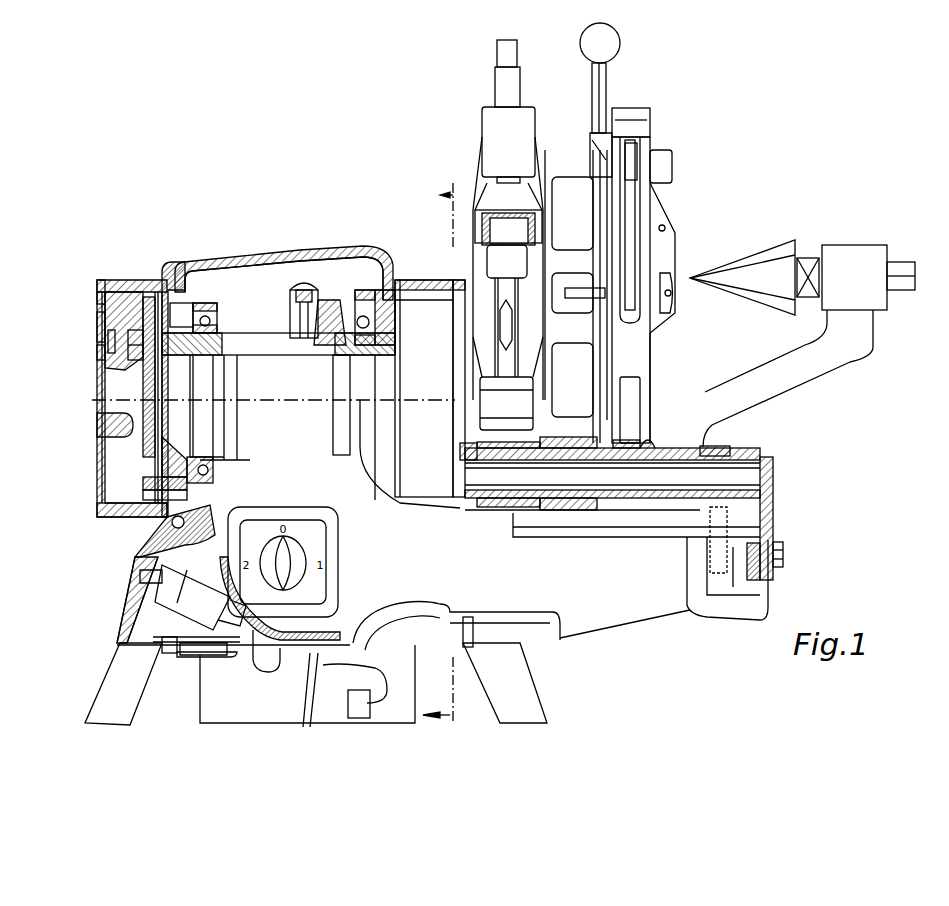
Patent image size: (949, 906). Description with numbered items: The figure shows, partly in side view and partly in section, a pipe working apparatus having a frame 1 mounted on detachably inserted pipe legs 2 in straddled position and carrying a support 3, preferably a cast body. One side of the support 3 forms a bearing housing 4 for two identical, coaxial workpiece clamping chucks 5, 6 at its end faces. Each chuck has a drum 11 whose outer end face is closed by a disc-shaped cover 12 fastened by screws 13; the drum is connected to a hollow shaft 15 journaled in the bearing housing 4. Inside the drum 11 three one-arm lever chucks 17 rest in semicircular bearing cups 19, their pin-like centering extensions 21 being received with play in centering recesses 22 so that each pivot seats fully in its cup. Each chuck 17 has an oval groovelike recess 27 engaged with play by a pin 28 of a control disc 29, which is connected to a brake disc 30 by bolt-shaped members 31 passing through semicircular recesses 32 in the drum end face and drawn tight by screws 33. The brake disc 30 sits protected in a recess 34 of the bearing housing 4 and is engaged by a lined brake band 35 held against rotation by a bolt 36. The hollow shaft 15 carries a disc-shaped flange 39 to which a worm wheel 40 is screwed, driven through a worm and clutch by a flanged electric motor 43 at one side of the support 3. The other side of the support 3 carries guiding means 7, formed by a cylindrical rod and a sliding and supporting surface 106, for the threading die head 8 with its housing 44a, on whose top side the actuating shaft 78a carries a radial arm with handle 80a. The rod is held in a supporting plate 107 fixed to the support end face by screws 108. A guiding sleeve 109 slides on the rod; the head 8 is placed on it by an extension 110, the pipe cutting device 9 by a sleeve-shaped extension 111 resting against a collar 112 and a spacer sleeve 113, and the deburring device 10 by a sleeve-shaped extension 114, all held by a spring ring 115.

The frame 1 is at (682, 625).
The pipe legs 2 is at (530, 694).
The support 3 is at (622, 617).
The bearing housing 4 is at (310, 245).
The chuck 5 is at (105, 278).
The chuck 6 is at (449, 250).
The guiding means 7 is at (762, 456).
The threading die head 8 is at (678, 202).
The pipe cutting device 9 is at (473, 146).
The deburring device 10 is at (763, 243).
The drum 11 is at (127, 281).
The disc-shaped cover 12 is at (98, 320).
The screws 13 is at (97, 432).
The hollow shaft 15 is at (252, 340).
The chucks 17 is at (123, 343).
The bearing cup 19 is at (150, 281).
The centering extension 21 is at (97, 287).
The centering recesses 22 is at (98, 298).
The groovelike recess 27 is at (98, 353).
The pin 28 is at (135, 372).
The control disc 29 is at (163, 280).
The brake disc 30 is at (213, 487).
The bolt-shaped members 31 is at (152, 492).
The slot-shaped semicircular recesses 32 is at (138, 518).
The screws 33 is at (145, 484).
The recess 34 is at (217, 260).
The brake band 35 is at (167, 519).
The bolt 36 is at (187, 268).
The disc-shaped flange 39 is at (323, 333).
The worm wheel 40 is at (292, 273).
The flanged electric motor 43 is at (403, 703).
The housing 44a is at (643, 115).
The actuating shaft 78a is at (600, 80).
The handle 80a is at (611, 50).
The sliding and supporting surface 106 is at (642, 525).
The supporting plate 107 is at (775, 465).
The screws 108 is at (783, 556).
The guiding sleeve 109 is at (718, 441).
The extension 110 is at (651, 440).
The sleeve-shaped extension 111 is at (515, 447).
The collar 112 is at (460, 447).
The spacer sleeve 113 is at (563, 447).
The sleeve-shaped extension 114 is at (650, 448).
The spring ring 115 is at (712, 452).